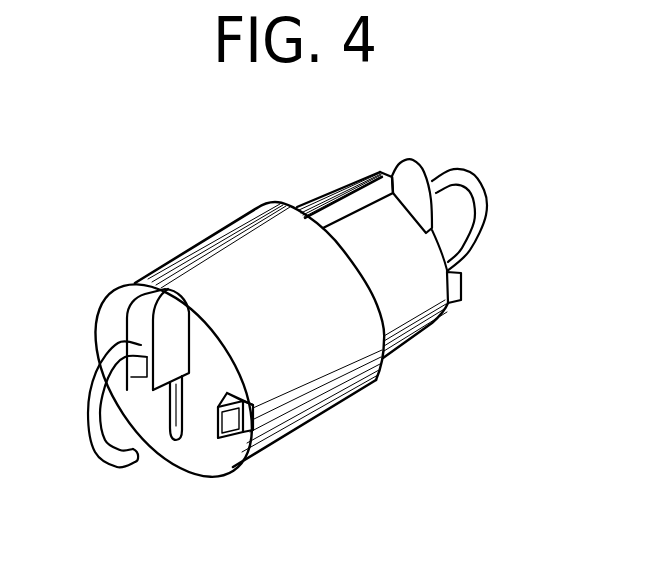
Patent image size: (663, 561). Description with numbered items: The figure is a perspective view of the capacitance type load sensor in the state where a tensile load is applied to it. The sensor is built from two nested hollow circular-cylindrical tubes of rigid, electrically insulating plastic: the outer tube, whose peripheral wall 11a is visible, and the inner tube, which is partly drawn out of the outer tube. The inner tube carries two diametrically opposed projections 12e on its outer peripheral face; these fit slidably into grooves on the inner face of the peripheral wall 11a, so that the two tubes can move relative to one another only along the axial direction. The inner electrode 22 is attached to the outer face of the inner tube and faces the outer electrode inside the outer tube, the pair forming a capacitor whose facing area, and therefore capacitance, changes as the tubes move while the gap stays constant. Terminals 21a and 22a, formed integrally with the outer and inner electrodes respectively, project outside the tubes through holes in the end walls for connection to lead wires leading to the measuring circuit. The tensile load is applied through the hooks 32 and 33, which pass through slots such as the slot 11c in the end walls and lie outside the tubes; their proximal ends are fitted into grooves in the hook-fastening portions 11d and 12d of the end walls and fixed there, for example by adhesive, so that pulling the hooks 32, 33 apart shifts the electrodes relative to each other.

The peripheral wall 11a is at (220, 257).
The slot 11c is at (176, 450).
The hook-fastening portion 11d is at (155, 307).
The hook-fastening portion 12d is at (412, 173).
The projection 12e is at (343, 200).
The terminal 21a is at (228, 443).
The inner electrode 22 is at (407, 312).
The terminal 22a is at (456, 290).
The hook 32 is at (90, 447).
The hook 33 is at (470, 187).